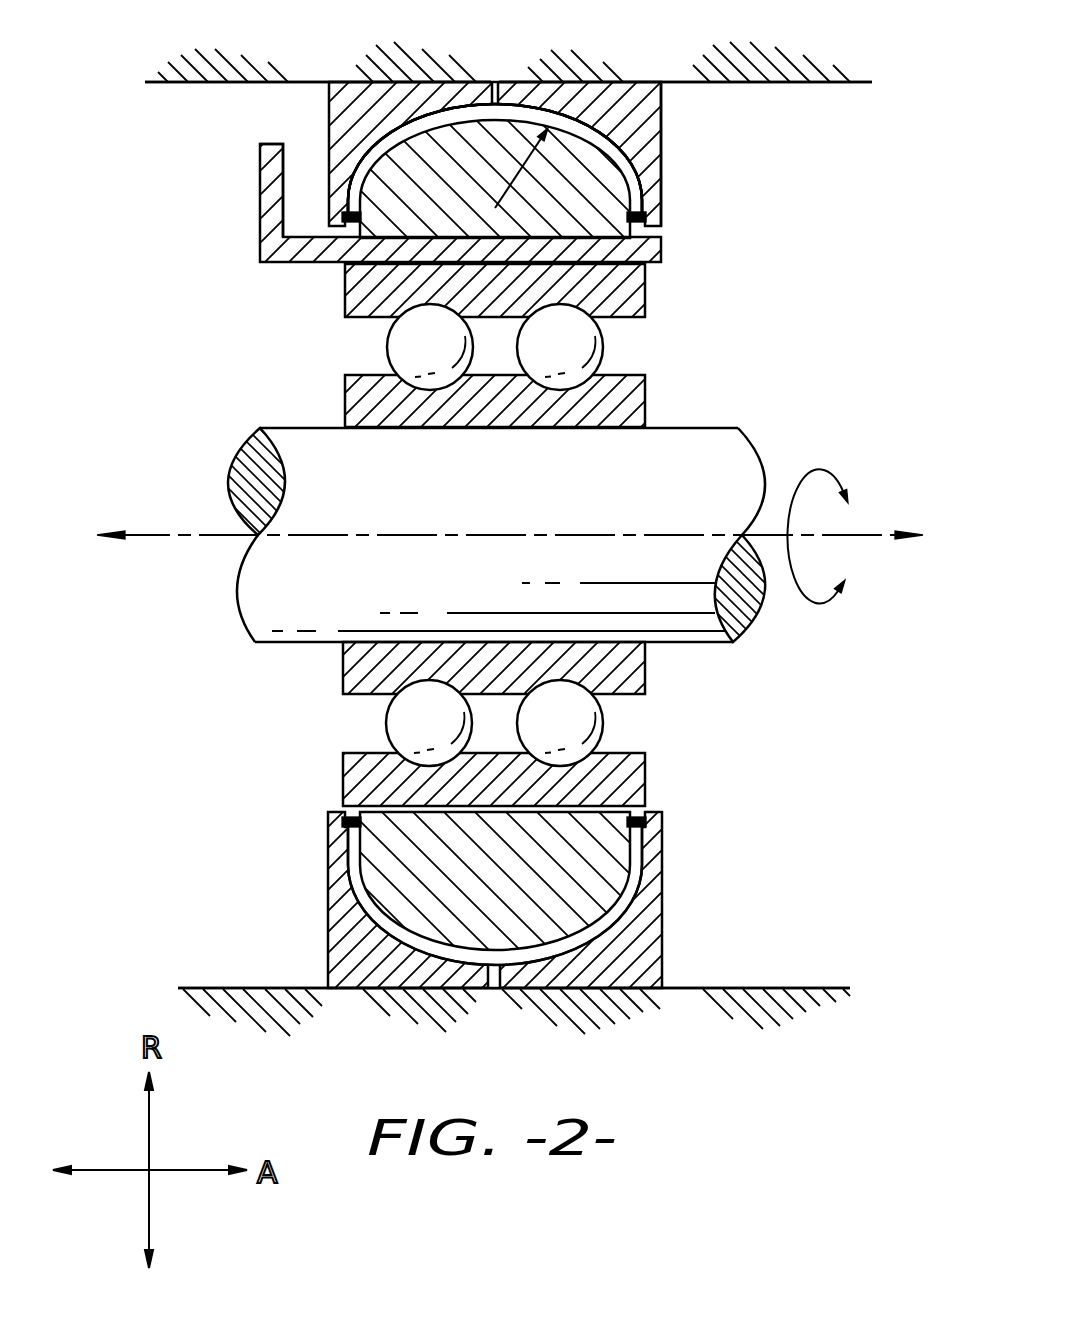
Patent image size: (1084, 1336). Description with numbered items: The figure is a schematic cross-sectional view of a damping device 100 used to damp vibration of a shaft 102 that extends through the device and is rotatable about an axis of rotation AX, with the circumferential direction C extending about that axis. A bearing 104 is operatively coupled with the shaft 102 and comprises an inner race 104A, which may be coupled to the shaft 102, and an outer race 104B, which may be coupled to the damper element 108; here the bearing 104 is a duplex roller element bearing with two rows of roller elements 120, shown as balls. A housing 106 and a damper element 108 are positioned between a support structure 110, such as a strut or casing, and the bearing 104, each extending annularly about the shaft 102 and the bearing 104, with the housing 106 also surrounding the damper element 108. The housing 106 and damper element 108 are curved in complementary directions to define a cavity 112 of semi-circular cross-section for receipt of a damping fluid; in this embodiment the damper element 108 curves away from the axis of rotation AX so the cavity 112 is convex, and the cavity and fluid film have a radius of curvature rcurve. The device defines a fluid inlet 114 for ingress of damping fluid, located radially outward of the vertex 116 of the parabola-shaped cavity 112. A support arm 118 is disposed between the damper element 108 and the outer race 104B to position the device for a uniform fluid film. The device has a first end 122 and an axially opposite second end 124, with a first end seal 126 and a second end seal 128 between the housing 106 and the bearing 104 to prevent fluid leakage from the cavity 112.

The damping device 100 is at (500, 518).
The shaft 102 is at (303, 427).
The bearing 104 is at (506, 535).
The inner race 104A is at (648, 392).
The outer race 104B is at (648, 288).
The housing 106 is at (400, 86).
The damper element 108 is at (632, 150).
The support structure 110 is at (773, 84).
The cavity 112 is at (610, 122).
The fluid inlet 114 is at (493, 70).
The vertex 116 is at (497, 92).
The support arm 118 is at (663, 243).
The roller elements 120 is at (603, 338).
The first end 122 is at (264, 93).
The second end 124 is at (790, 184).
The first end seal 126 is at (345, 205).
The second end seal 128 is at (648, 204).
The radius of curvature rcurve is at (520, 173).
The circumferential direction C is at (820, 521).
The axis of rotation AX is at (865, 532).